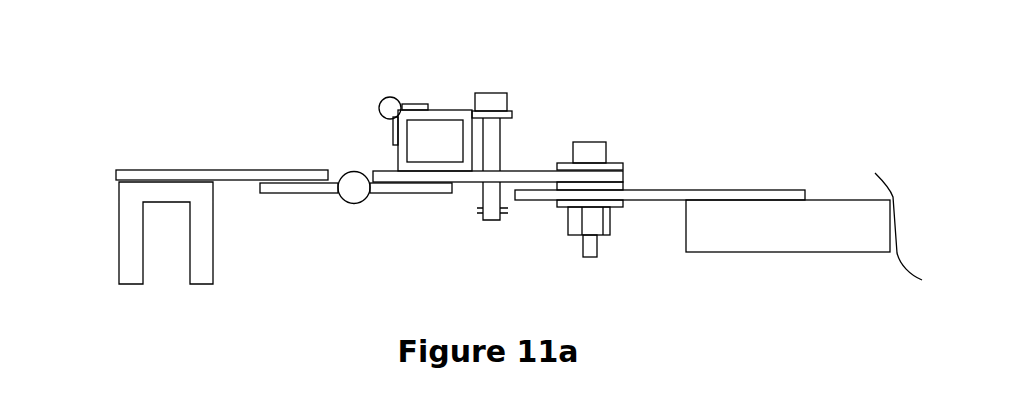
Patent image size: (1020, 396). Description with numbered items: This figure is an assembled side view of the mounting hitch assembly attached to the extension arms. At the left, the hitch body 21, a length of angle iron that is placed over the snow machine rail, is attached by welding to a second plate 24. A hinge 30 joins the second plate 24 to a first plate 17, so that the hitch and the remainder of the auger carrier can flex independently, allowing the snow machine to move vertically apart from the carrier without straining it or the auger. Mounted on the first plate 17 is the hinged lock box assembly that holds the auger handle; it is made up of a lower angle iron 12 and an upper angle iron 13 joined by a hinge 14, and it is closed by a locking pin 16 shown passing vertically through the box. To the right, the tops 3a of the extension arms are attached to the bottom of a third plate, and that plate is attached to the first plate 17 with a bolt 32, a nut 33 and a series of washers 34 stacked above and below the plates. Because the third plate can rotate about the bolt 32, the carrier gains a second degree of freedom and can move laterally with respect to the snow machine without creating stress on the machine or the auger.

The tops of the extension arms 3a is at (735, 258).
The lower angle iron 12 is at (397, 156).
The upper angle iron 13 is at (448, 107).
The hinge 14 is at (368, 98).
The locking pin 16 is at (496, 147).
The first plate 17 is at (698, 175).
The hitch body 21 is at (105, 221).
The second plate 24 is at (144, 170).
The hinge 30 is at (353, 207).
The bolt 32 is at (605, 153).
The nut 33 is at (573, 227).
The washers 34 is at (625, 187).